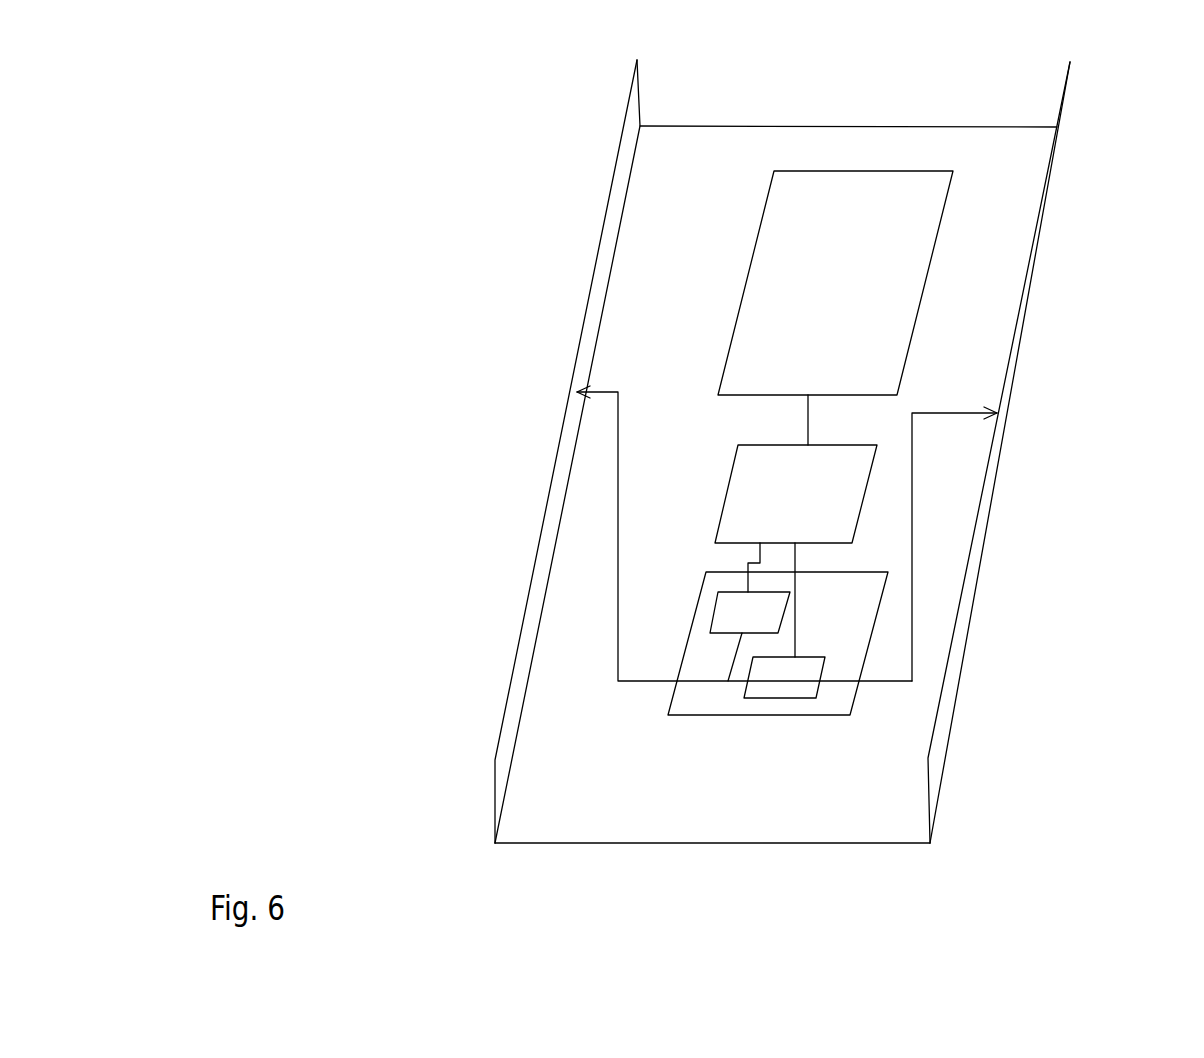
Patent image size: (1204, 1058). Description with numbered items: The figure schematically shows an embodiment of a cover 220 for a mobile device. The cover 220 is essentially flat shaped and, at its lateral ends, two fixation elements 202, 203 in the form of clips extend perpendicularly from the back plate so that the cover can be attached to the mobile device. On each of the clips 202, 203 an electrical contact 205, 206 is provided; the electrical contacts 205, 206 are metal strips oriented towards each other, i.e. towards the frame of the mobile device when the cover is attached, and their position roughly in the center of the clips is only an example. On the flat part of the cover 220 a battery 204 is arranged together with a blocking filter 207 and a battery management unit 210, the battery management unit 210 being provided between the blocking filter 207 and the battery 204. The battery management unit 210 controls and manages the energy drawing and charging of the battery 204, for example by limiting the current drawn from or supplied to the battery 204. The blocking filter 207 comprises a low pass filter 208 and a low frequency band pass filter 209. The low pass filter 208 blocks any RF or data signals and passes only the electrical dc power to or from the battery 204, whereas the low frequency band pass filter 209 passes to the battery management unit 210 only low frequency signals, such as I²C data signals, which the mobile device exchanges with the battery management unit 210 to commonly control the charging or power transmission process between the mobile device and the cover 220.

The fixation element 202 is at (1063, 143).
The fixation element 203 is at (630, 140).
The battery 204 is at (820, 180).
The electrical contact 205 is at (585, 360).
The electrical contact 206 is at (1015, 370).
The blocking filter 207 is at (685, 702).
The low pass filter 208 is at (780, 692).
The low frequency band pass filter 209 is at (715, 603).
The battery management unit 210 is at (757, 467).
The cover 220 is at (1000, 163).